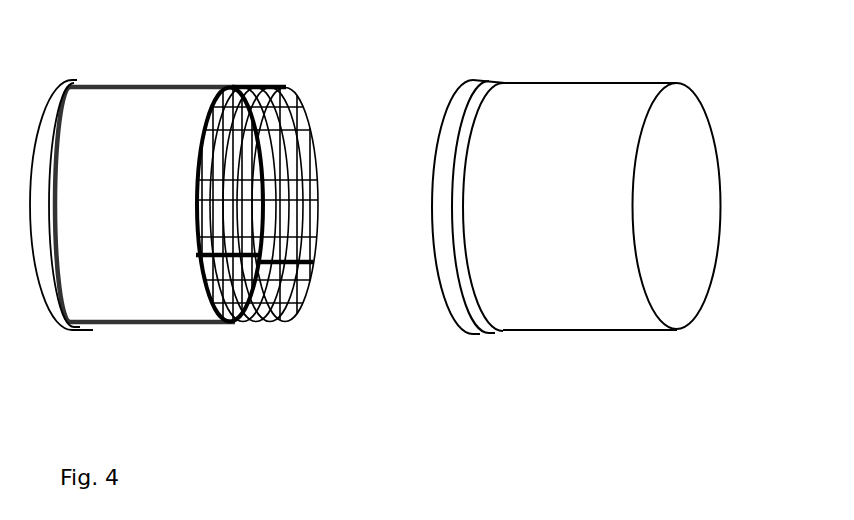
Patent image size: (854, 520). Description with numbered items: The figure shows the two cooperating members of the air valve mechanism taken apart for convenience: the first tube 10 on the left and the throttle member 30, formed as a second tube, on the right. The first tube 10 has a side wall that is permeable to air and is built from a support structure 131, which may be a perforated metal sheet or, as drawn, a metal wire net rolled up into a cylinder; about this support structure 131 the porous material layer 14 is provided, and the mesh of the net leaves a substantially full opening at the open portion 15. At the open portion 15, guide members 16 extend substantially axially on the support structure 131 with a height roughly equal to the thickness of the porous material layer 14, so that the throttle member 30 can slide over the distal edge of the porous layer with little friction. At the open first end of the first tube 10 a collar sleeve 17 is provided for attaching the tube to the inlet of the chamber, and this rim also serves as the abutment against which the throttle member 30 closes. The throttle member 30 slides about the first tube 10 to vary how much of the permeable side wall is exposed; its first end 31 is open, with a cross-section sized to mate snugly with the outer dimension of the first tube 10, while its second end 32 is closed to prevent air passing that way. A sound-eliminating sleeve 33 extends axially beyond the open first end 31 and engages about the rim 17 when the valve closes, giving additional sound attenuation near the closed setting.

The first tube 10 is at (310, 87).
The porous material layer 14 is at (94, 98).
The open portion 15 is at (258, 323).
The guide members 16 is at (262, 86).
The collar sleeve 17 is at (68, 325).
The support structure 131 is at (313, 167).
The throttle member 30 is at (700, 98).
The first end 31 is at (418, 303).
The second end 32 is at (663, 252).
The sound-eliminating sleeve 33 is at (467, 77).